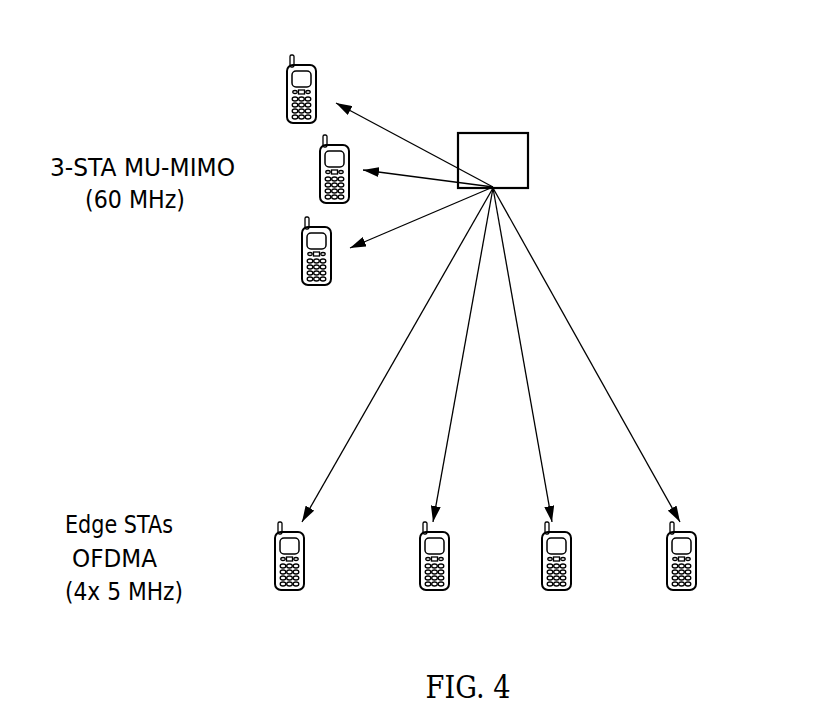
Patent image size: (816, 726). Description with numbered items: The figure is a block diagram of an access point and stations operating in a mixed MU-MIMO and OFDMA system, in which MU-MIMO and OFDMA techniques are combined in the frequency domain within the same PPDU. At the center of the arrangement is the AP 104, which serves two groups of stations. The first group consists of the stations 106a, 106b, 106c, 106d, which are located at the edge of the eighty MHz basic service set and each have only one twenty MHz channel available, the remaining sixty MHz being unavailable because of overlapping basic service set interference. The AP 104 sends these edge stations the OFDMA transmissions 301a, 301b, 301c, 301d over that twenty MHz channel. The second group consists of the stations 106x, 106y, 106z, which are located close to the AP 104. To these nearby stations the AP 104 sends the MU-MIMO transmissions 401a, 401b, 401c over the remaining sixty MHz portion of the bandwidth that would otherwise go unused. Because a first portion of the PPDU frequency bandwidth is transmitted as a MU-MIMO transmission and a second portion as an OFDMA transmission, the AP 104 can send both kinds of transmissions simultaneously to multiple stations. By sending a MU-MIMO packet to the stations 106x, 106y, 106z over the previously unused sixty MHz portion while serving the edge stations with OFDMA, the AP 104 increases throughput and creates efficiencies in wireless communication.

The access point 104 is at (493, 160).
The station 106x is at (276, 89).
The station 106y is at (311, 169).
The station 106z is at (290, 251).
The station 106a is at (290, 573).
The station 106b is at (437, 573).
The station 106c is at (561, 573).
The station 106d is at (692, 573).
The MU-MIMO transmission 401a is at (368, 117).
The MU-MIMO transmission 401b is at (397, 173).
The MU-MIMO transmission 401c is at (393, 230).
The OFDMA transmission 301a is at (360, 415).
The OFDMA transmission 301b is at (447, 447).
The OFDMA transmission 301c is at (542, 443).
The OFDMA transmission 301d is at (637, 432).